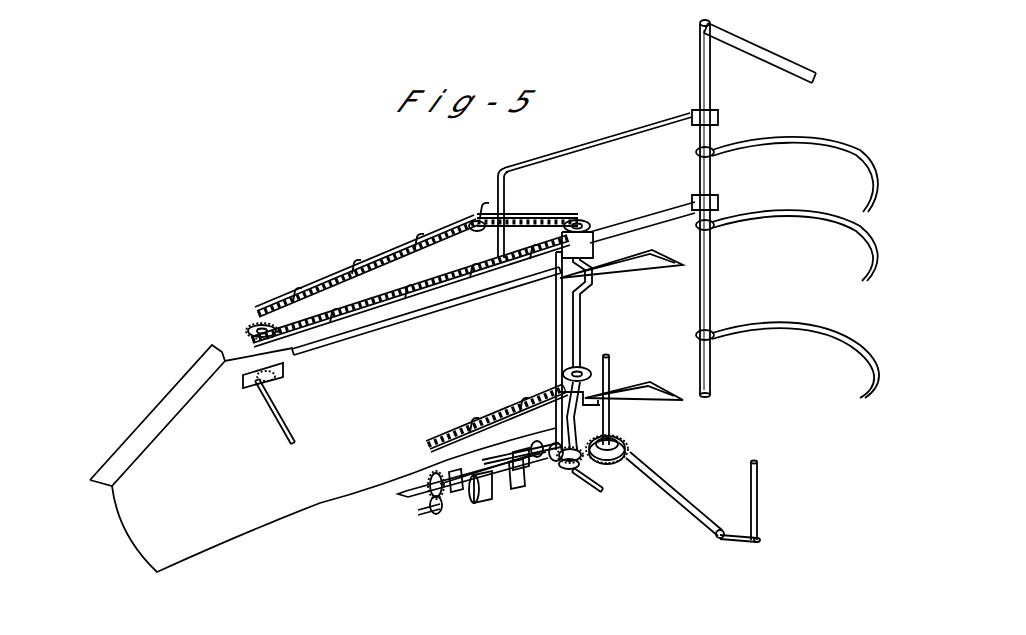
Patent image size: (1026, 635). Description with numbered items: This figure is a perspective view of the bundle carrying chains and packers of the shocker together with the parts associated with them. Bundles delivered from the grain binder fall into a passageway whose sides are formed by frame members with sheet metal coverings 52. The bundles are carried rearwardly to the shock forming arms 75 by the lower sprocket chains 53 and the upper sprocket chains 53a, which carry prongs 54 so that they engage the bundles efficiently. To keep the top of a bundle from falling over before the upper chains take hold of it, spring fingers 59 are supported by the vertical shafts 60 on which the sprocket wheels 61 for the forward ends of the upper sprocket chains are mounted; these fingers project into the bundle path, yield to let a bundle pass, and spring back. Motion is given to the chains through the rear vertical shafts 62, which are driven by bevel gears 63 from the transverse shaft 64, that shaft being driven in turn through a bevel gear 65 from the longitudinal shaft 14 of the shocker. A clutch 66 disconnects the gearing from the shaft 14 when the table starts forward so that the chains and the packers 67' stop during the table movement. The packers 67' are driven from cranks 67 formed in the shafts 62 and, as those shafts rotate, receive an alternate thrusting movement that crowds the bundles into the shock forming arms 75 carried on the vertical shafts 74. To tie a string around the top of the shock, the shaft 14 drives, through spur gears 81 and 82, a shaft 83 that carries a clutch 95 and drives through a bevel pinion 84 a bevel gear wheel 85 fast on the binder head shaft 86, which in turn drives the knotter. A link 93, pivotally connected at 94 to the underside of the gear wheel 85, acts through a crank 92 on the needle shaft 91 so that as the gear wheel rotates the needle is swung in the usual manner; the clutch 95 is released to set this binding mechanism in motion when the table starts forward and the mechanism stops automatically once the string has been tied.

The longitudinal shaft 14 is at (406, 495).
The sheet metal coverings 52 is at (323, 458).
The lower sprocket chains 53 is at (490, 421).
The upper sprocket chains 53a is at (438, 300).
The prongs 54 is at (362, 273).
The spring fingers 59 is at (272, 427).
The vertical shafts 60 is at (265, 326).
The sprocket wheels 61 is at (250, 329).
The rear vertical shafts 62 is at (592, 224).
The bevel gears 63 is at (568, 470).
The transverse shaft 64 is at (587, 493).
The bevel gear 65 is at (558, 462).
The clutch 66 is at (512, 459).
The cranks 67 is at (621, 327).
The packers 67' is at (673, 286).
The vertical shafts 74 is at (712, 280).
The shock forming arms 75 is at (742, 326).
The spur gear 81 is at (441, 478).
The spur gear 82 is at (436, 515).
The shaft 83 is at (478, 501).
The bevel pinion 84 is at (578, 442).
The bevel gear wheel 85 is at (614, 441).
The binder head shaft 86 is at (611, 362).
The needle shaft 91 is at (759, 500).
The crank 92 is at (738, 534).
The link 93 is at (673, 492).
The pivotal connection 94 is at (628, 452).
The clutch 95 is at (495, 489).